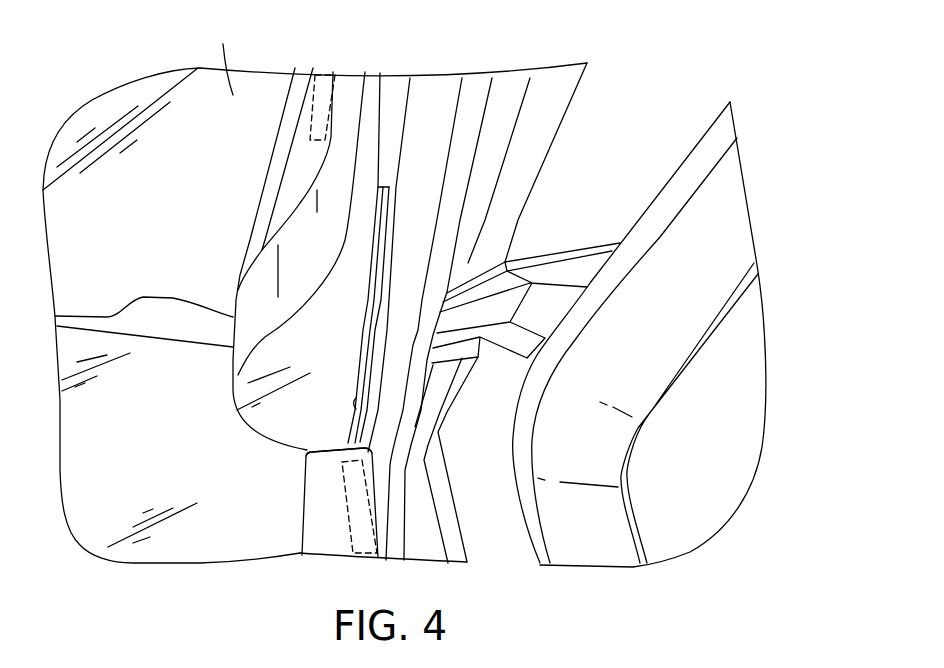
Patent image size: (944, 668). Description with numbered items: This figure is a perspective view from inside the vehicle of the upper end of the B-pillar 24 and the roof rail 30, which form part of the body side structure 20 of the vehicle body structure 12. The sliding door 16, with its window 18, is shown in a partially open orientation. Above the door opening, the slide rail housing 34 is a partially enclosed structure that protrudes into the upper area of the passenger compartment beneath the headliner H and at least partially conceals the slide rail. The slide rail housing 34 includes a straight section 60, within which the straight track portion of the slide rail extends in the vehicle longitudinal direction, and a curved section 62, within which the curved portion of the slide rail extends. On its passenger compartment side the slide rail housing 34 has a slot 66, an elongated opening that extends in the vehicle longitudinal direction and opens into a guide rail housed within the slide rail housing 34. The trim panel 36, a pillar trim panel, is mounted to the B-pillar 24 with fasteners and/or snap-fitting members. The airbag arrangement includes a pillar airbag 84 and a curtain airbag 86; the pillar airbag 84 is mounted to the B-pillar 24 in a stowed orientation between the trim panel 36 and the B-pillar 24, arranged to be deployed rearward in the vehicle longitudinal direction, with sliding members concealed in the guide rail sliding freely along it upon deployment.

The vehicle body structure 12 is at (128, 44).
The headliner H is at (223, 57).
The sliding door 16 is at (665, 203).
The window 18 is at (700, 477).
The body side structure 20 is at (507, 68).
The B-pillar 24 is at (292, 524).
The roof rail 30 is at (508, 100).
The slide rail housing 34 is at (193, 133).
The trim panel 36 is at (305, 492).
The straight section 60 is at (337, 170).
The curved section 62 is at (253, 292).
The slot 66 is at (353, 410).
The pillar airbag 84 is at (360, 503).
The curtain airbag 86 is at (327, 72).